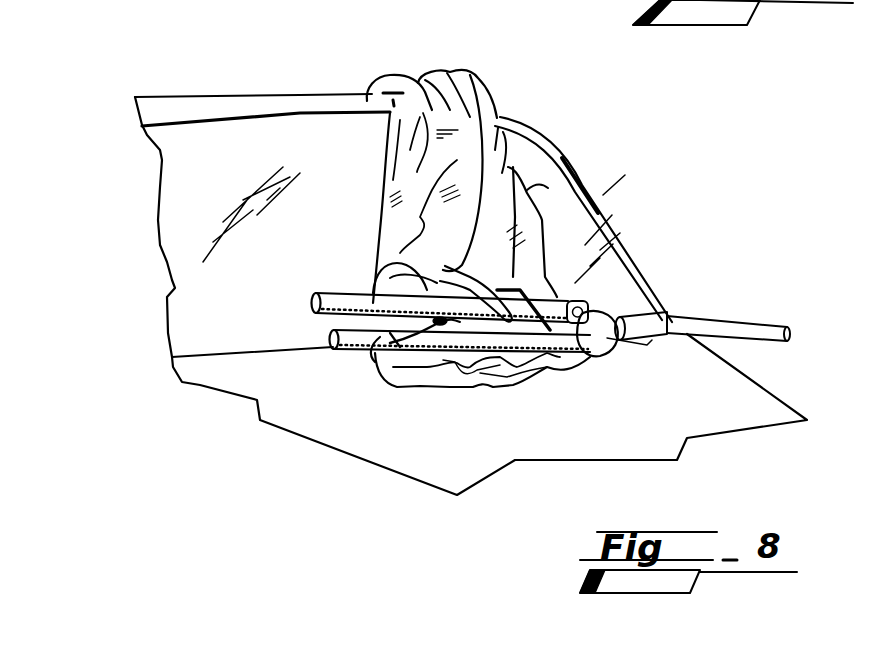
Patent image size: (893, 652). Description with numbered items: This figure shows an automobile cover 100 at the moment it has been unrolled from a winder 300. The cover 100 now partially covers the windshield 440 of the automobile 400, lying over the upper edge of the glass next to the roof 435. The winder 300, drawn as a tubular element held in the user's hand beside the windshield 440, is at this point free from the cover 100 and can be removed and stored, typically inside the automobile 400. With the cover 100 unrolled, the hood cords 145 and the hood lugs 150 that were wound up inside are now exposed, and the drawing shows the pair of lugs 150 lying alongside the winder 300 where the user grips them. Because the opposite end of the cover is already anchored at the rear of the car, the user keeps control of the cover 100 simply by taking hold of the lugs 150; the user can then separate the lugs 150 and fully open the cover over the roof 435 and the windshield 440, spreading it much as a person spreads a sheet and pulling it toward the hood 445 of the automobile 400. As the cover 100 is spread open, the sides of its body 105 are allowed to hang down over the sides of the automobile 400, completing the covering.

The automobile cover 100 is at (428, 68).
The body 105 is at (558, 192).
The hood cords 145 is at (381, 265).
The hood lugs 150 is at (423, 333).
The winder 300 is at (606, 299).
The automobile 400 is at (182, 62).
The roof 435 is at (287, 102).
The windshield 440 is at (180, 199).
The hood 445 is at (333, 410).